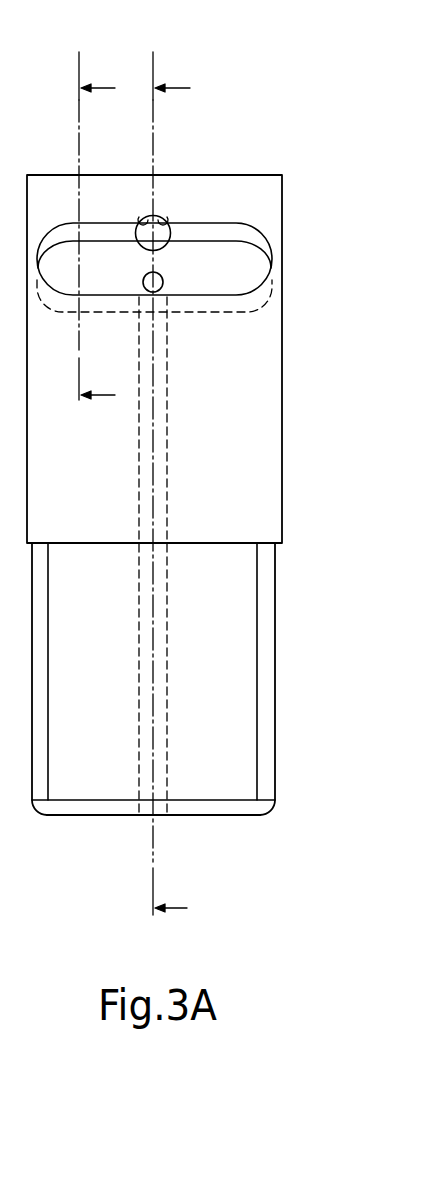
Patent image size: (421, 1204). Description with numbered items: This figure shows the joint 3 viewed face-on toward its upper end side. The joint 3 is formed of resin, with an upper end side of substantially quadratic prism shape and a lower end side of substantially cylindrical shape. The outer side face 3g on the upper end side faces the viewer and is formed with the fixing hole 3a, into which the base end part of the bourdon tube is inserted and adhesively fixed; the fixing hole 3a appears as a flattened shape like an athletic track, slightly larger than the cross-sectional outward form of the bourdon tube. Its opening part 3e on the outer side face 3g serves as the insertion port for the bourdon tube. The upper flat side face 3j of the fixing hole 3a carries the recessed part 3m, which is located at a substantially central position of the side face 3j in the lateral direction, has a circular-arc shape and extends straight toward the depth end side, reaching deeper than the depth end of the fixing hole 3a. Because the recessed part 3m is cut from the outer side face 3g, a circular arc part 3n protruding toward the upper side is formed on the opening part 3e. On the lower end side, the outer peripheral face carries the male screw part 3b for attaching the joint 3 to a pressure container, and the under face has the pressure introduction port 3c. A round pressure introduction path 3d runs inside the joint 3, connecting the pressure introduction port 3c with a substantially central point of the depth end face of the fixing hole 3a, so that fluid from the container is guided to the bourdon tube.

The joint 3 is at (185, 483).
The fixing hole 3a is at (213, 277).
The male screw part 3b is at (275, 645).
The pressure introduction port 3c is at (143, 817).
The pressure introduction path 3d is at (167, 442).
The opening part 3e is at (210, 293).
The outer side face 3g is at (94, 504).
The side face 3j is at (233, 232).
The recessed part 3m is at (143, 222).
The circular arc part 3n is at (160, 222).